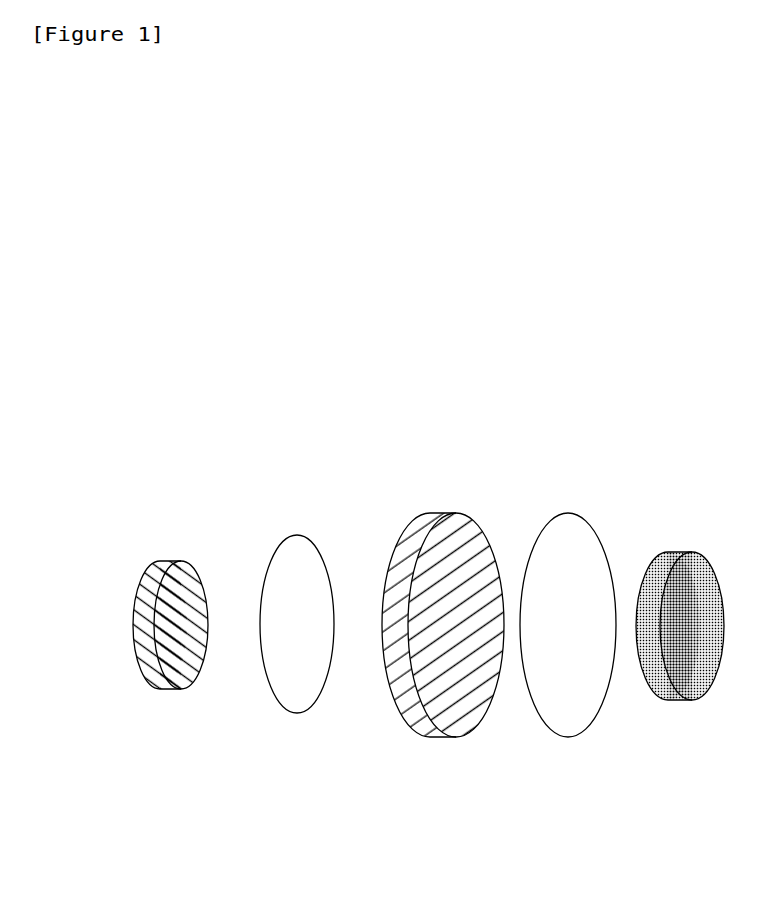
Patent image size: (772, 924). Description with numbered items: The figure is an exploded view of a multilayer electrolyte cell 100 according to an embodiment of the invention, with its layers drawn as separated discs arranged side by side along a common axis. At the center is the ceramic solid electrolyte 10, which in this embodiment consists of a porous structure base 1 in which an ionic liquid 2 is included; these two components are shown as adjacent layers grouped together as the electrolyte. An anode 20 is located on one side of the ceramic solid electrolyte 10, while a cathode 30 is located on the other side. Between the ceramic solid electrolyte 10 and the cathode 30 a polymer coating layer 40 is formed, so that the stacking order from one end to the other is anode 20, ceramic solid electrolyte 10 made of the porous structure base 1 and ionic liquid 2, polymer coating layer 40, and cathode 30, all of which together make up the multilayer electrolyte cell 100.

The multilayer electrolyte cell 100 is at (175, 518).
The ceramic solid electrolyte 10 is at (385, 708).
The porous structure base 1 is at (445, 672).
The ionic liquid 2 is at (293, 713).
The anode 20 is at (167, 689).
The cathode 30 is at (676, 702).
The polymer coating layer 40 is at (566, 737).